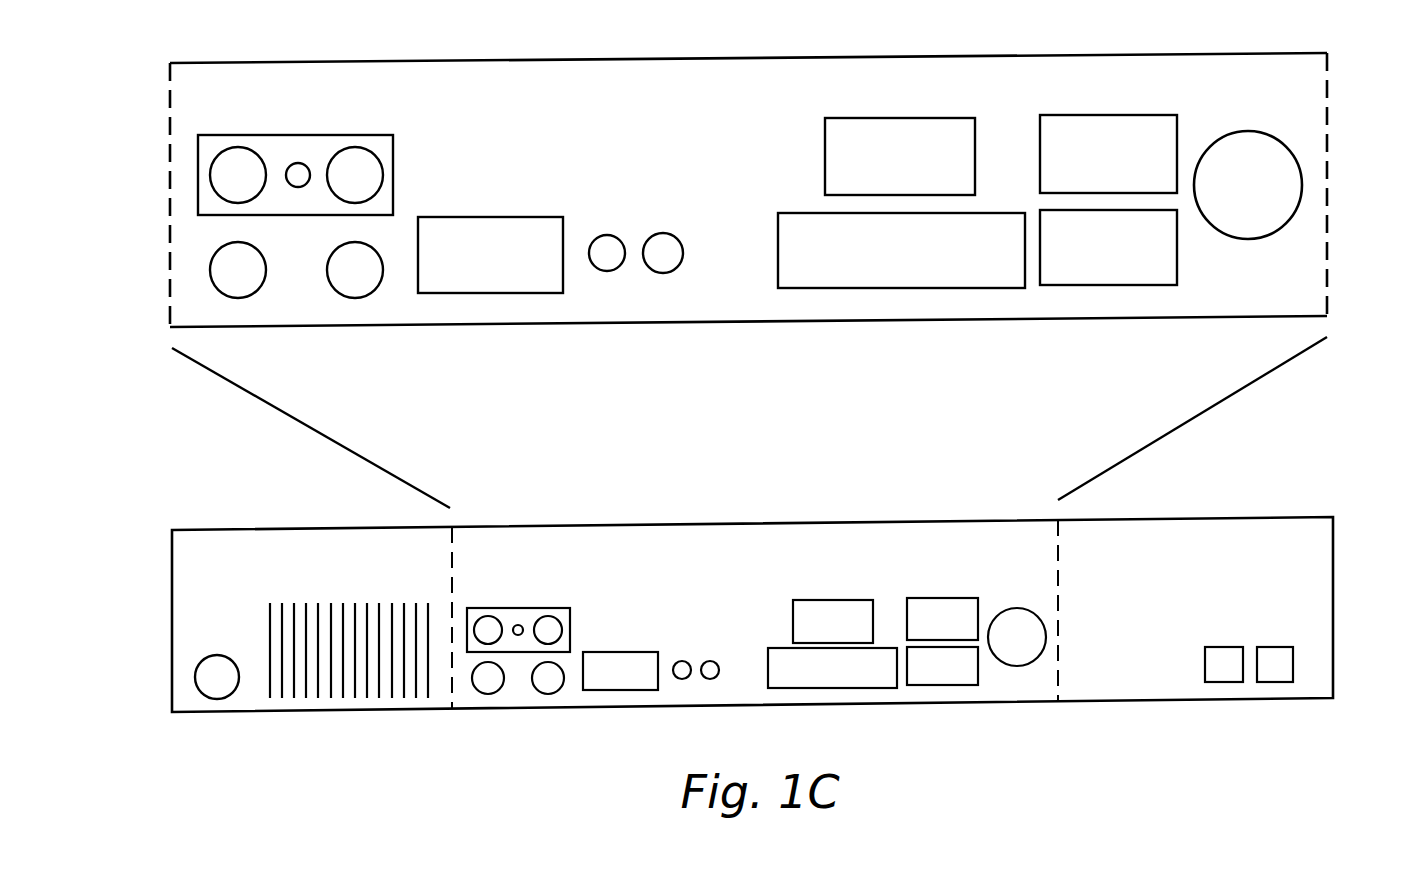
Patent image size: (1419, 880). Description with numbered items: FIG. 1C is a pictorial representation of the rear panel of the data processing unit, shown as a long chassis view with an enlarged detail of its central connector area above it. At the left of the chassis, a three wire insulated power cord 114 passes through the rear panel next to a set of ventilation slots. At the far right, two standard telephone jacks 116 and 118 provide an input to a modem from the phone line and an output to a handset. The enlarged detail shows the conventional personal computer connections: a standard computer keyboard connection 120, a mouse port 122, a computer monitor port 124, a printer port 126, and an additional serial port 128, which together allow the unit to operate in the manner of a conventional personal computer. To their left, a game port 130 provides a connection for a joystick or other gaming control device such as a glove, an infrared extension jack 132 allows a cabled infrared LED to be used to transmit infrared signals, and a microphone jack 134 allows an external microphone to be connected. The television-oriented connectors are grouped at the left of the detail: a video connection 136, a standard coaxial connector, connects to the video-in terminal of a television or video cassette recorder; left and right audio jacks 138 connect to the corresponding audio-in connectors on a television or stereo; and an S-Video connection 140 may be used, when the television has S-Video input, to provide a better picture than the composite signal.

The power cord 114 is at (195, 678).
The telephone jack 116 is at (1233, 600).
The telephone jack 118 is at (1280, 647).
The computer keyboard connection 120 is at (1302, 185).
The mouse port 122 is at (1142, 115).
The computer monitor port 124 is at (938, 118).
The printer port 126 is at (838, 288).
The additional serial port 128 is at (1095, 285).
The game port 130 is at (525, 217).
The infrared extension jack 132 is at (607, 235).
The microphone jack 134 is at (683, 257).
The video connection 136 is at (383, 175).
The left and right audio jacks 138 is at (212, 246).
The S-Video connection 140 is at (330, 247).